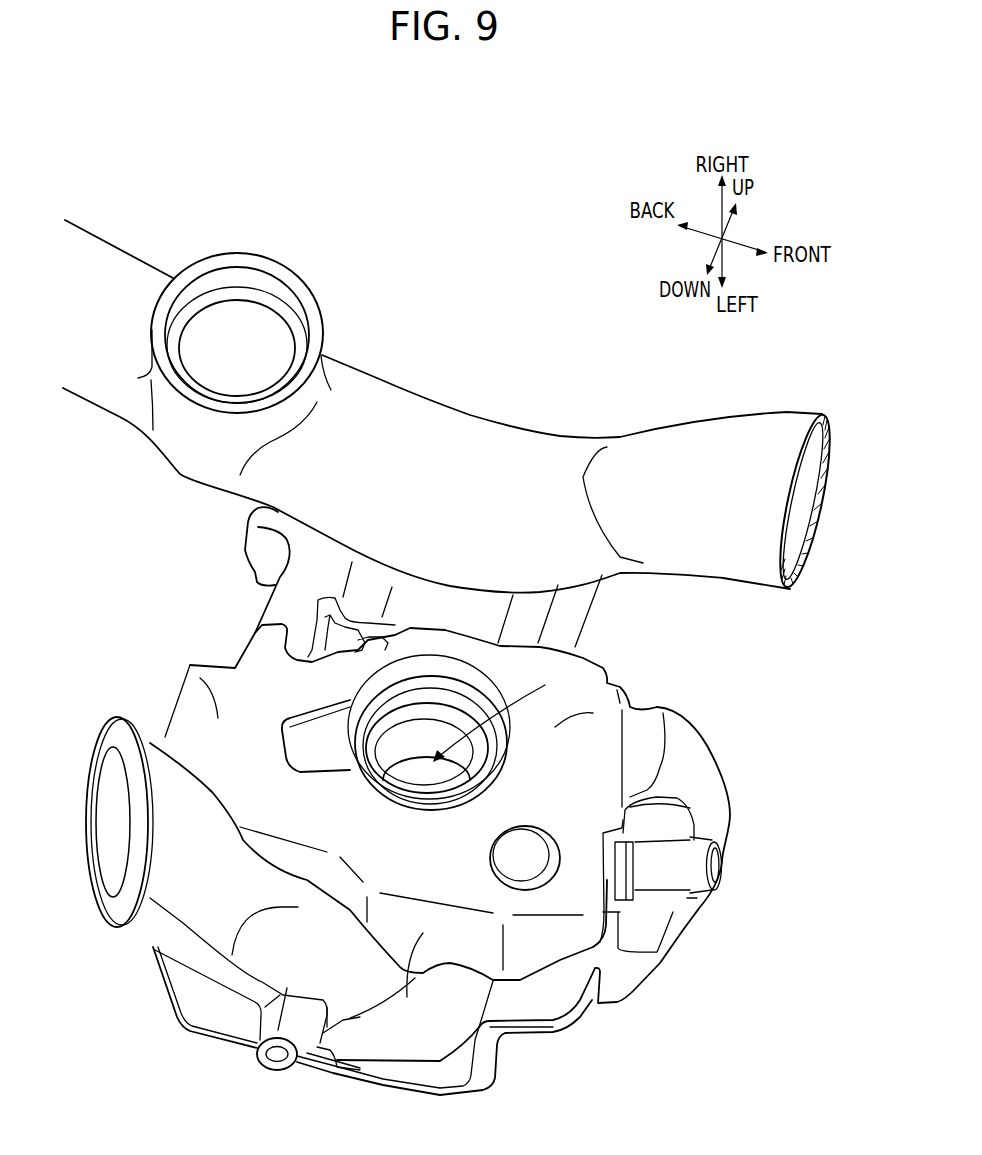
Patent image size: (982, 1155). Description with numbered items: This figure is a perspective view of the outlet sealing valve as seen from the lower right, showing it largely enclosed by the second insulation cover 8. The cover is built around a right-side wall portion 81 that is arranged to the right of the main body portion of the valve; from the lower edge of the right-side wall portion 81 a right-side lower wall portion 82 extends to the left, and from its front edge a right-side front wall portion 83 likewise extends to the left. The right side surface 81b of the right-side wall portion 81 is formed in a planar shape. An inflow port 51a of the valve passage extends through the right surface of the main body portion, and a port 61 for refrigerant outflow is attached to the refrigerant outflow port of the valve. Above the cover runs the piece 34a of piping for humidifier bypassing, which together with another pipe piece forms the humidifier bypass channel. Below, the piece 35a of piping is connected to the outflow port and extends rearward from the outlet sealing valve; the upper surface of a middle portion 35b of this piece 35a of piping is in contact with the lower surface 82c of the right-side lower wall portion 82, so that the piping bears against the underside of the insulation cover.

The piece of piping for humidifier bypassing 34a is at (503, 440).
The second insulation cover 8 is at (230, 660).
The right-side wall portion 81 is at (200, 678).
The inflow port 51a is at (580, 817).
The right side surface 81b is at (655, 708).
The right-side front wall portion 83 is at (692, 757).
The port for refrigerant outflow 61 is at (665, 880).
The right-side lower wall portion 82 is at (553, 950).
The lower surface 82c is at (407, 997).
The piece of piping 35a is at (207, 972).
The middle portion 35b is at (232, 955).